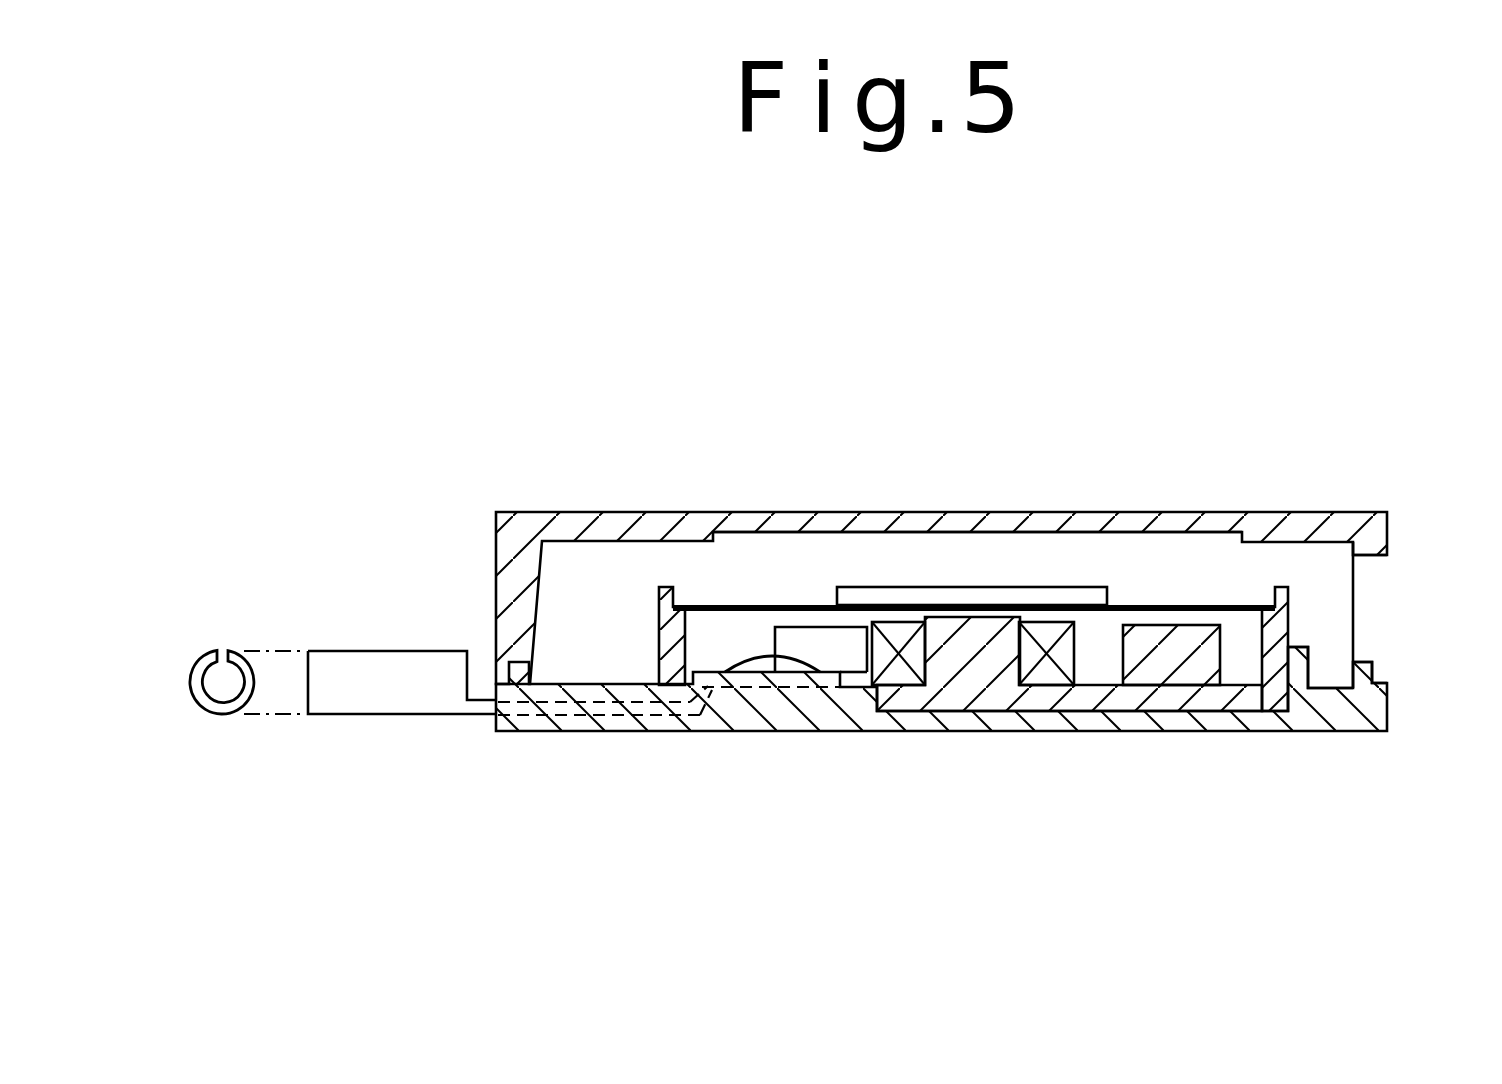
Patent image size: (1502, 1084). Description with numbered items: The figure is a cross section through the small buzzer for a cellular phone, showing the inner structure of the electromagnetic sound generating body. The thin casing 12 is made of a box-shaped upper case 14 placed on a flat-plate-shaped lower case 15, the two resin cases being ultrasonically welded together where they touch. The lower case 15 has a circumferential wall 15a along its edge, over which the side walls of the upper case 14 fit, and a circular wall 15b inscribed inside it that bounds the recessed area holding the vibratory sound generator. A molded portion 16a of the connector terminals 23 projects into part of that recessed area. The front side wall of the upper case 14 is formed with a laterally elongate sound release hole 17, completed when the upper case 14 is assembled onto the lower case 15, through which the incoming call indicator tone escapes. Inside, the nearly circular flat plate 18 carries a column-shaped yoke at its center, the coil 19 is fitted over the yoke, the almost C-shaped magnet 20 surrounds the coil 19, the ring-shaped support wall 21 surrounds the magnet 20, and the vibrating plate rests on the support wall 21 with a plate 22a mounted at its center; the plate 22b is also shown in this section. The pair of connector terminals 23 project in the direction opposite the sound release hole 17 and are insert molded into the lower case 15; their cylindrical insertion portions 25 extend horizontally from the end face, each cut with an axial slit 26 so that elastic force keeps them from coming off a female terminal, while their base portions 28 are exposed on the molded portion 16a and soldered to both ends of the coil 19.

The casing 12 is at (587, 502).
The upper case 14 is at (1068, 512).
The lower case 15 is at (1143, 732).
The circumferential wall 15a is at (1372, 672).
The circular wall 15b is at (1308, 647).
The molded portion 16a is at (710, 684).
The sound release hole 17 is at (1372, 573).
The flat plate 18 is at (977, 627).
The coil 19 is at (887, 627).
The magnet 20 is at (1153, 632).
The support wall 21 is at (1291, 603).
The plate 22a is at (912, 590).
The plate 22b is at (1192, 606).
The connector terminals 23 is at (372, 722).
The insertion portions 25 is at (376, 650).
The slit 26 is at (224, 648).
The base portions 28 is at (750, 655).